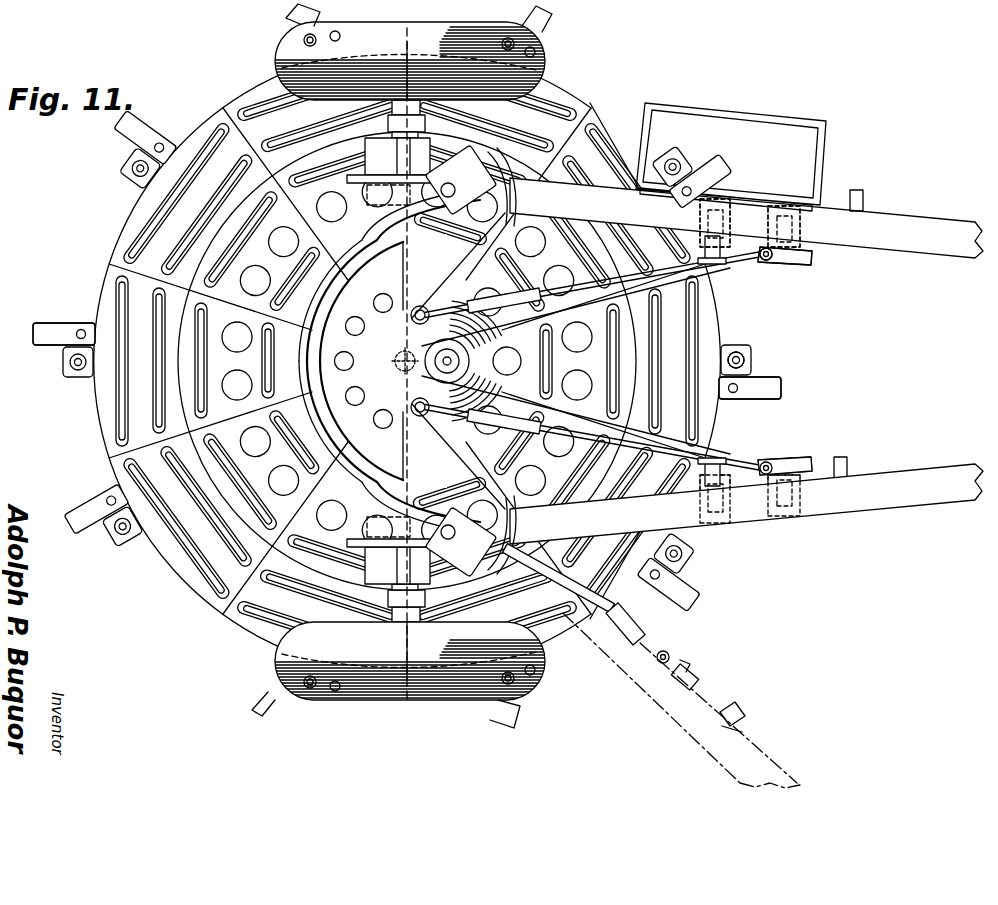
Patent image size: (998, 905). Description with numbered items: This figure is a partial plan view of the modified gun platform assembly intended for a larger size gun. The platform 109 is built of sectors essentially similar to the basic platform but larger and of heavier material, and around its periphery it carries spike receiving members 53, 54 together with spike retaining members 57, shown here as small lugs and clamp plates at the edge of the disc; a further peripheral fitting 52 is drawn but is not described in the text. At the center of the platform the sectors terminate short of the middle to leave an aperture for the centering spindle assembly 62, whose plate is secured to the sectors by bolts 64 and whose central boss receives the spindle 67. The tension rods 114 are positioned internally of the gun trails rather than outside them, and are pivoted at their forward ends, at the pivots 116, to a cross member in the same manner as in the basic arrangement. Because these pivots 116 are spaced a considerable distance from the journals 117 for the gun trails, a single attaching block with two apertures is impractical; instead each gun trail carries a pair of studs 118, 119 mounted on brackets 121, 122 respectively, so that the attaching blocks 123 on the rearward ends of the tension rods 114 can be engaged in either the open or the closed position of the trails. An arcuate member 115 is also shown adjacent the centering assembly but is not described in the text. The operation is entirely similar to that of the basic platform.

The bracket 52 is at (752, 352).
The spike receiving member 53 is at (752, 378).
The spike receiving member 54 is at (738, 352).
The spike retaining member 57 is at (550, 36).
The centering spindle assembly 62 is at (441, 357).
The bolts 64 is at (440, 370).
The spindle 67 is at (396, 356).
The platform 109 is at (106, 478).
The tension rods 114 is at (528, 299).
The arcuate arm 115 is at (404, 428).
The pivots 116 is at (421, 311).
The journals 117 is at (445, 191).
The stud 118 is at (720, 260).
The stud 119 is at (770, 260).
The bracket 121 is at (728, 200).
The bracket 122 is at (802, 229).
The attaching blocks 123 is at (812, 258).